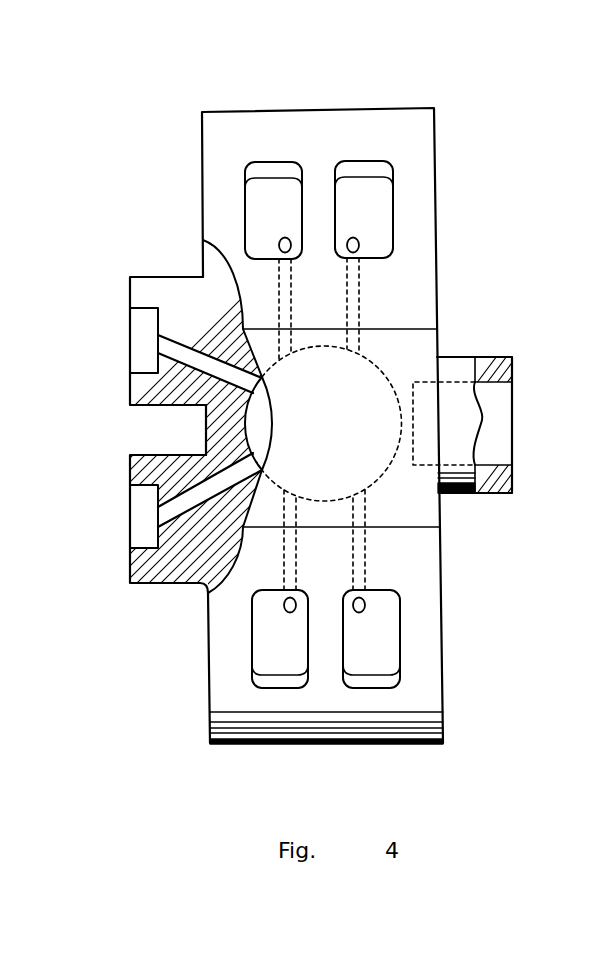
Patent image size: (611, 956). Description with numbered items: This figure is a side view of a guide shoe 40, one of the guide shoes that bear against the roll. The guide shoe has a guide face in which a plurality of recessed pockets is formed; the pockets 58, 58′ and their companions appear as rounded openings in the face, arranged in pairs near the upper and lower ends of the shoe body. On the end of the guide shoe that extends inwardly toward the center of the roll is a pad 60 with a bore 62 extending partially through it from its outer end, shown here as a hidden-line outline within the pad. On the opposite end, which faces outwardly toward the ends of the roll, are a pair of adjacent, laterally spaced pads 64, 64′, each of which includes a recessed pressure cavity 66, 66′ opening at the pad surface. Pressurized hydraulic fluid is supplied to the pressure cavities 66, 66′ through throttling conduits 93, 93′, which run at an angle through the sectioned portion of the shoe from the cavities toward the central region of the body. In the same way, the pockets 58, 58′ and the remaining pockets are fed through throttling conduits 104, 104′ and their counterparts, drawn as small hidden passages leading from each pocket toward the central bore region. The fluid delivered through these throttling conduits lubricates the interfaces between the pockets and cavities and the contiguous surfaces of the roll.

The valve body 40 is at (393, 108).
The recessed pocket 58 is at (277, 195).
The recessed pocket 58′ is at (283, 660).
The pad 60 is at (467, 357).
The bore 62 is at (495, 415).
The pad 64 is at (147, 275).
The pad 64′ is at (152, 583).
The recessed pressure cavity 66 is at (138, 352).
The recessed pressure cavity 66′ is at (145, 505).
The throttling conduit 93 is at (188, 355).
The throttling conduit 93′ is at (185, 505).
The throttling conduit 104 is at (279, 240).
The throttling conduit 104′ is at (288, 603).